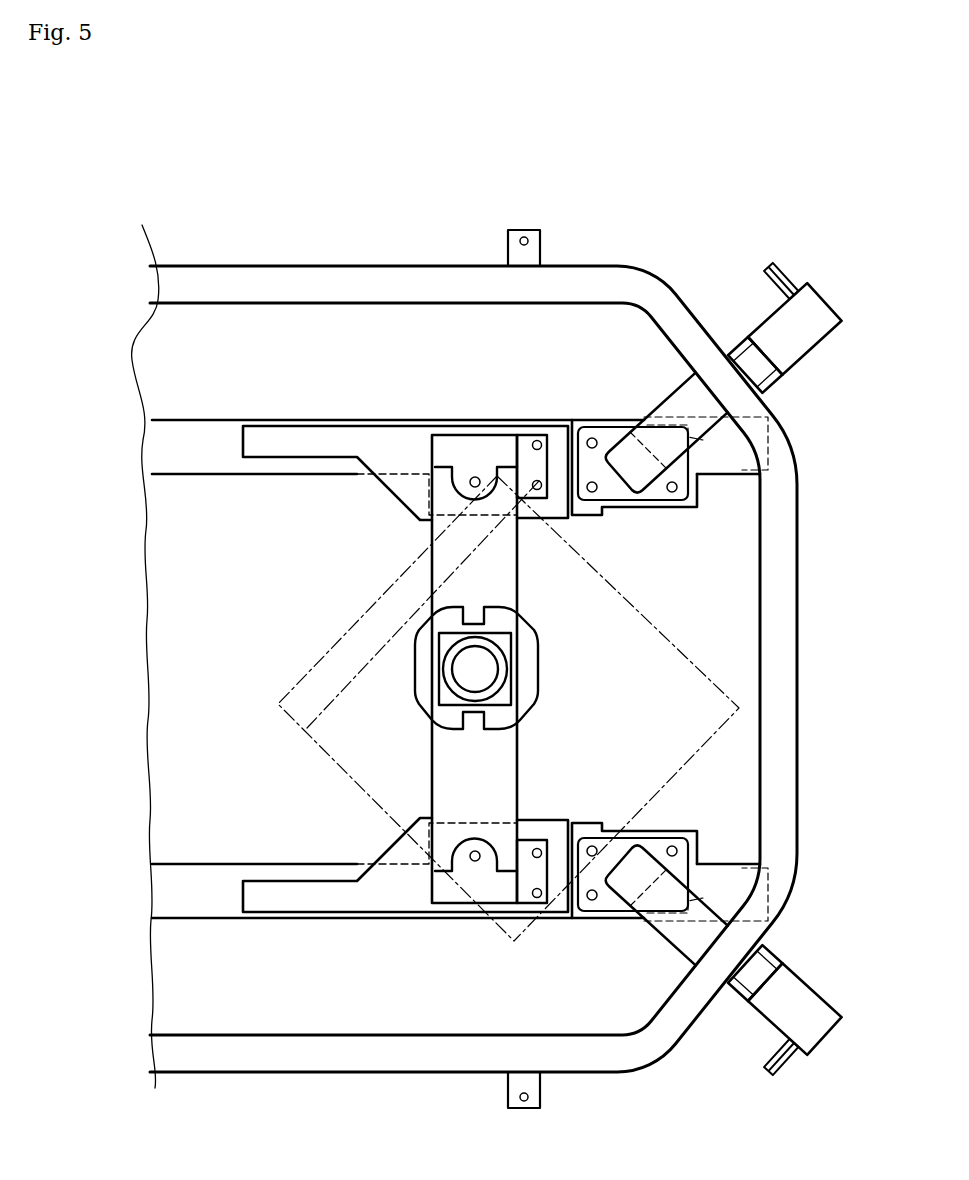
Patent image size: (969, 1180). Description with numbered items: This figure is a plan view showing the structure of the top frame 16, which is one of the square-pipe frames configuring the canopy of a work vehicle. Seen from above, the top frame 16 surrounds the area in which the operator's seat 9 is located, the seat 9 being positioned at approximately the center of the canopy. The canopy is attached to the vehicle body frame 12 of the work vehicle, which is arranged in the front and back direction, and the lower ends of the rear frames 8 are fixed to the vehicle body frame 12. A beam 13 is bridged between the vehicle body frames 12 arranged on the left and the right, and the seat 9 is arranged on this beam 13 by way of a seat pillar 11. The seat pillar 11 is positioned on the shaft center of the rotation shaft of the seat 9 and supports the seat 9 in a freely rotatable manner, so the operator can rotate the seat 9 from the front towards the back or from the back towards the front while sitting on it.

The rear frame 8 is at (653, 442).
The seat 9 is at (298, 680).
The seat pillar 11 is at (524, 640).
The vehicle body frame 12 is at (188, 462).
The beam 13 is at (499, 773).
The top frame 16 is at (287, 1057).